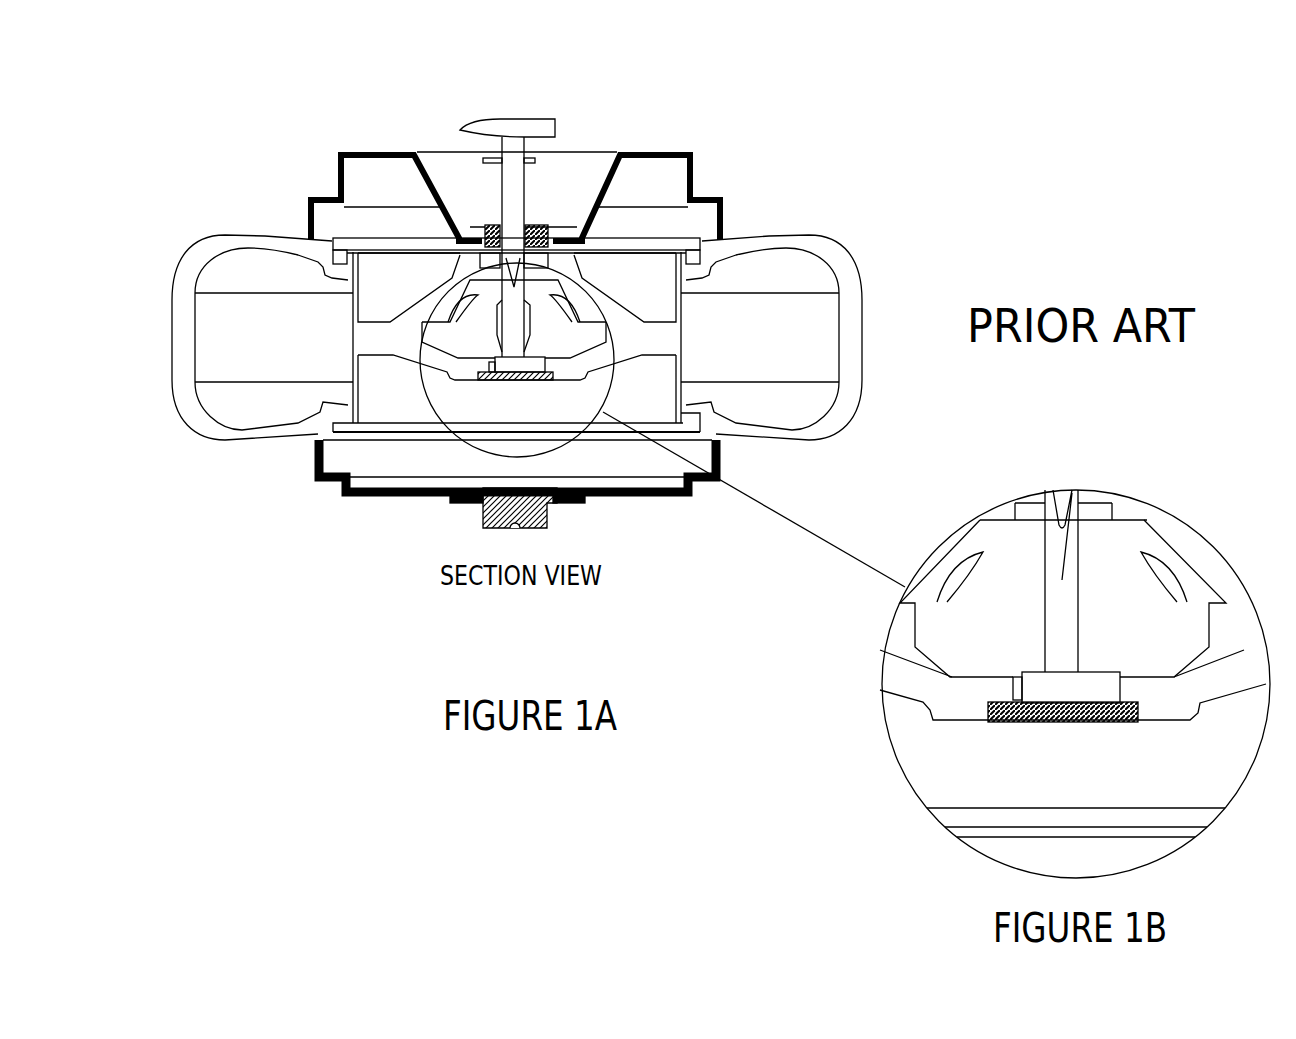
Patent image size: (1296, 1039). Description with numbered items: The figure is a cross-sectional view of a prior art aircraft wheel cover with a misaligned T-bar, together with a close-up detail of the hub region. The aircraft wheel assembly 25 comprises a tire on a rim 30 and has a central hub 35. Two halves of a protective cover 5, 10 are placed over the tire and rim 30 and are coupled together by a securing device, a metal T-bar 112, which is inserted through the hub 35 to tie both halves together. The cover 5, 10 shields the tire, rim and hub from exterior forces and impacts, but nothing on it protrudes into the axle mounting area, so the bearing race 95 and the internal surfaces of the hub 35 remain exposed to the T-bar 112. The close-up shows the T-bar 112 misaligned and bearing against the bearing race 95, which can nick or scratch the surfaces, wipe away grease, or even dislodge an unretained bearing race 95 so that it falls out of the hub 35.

In FIG. 1A, the protective cover 5 is at (673, 150).
In FIG. 1A, the protective cover 10 is at (340, 502).
In FIG. 1A, the aircraft wheel assembly 25 is at (823, 258).
In FIG. 1A, the rim 30 is at (670, 250).
In FIG. 1A, the hub 35 is at (468, 370).
In FIG. 1A, the T-bar 112 is at (510, 128).
In FIG. 1B, the T-bar 112 is at (1077, 512).
In FIG. 1B, the bearing race 95 is at (992, 719).